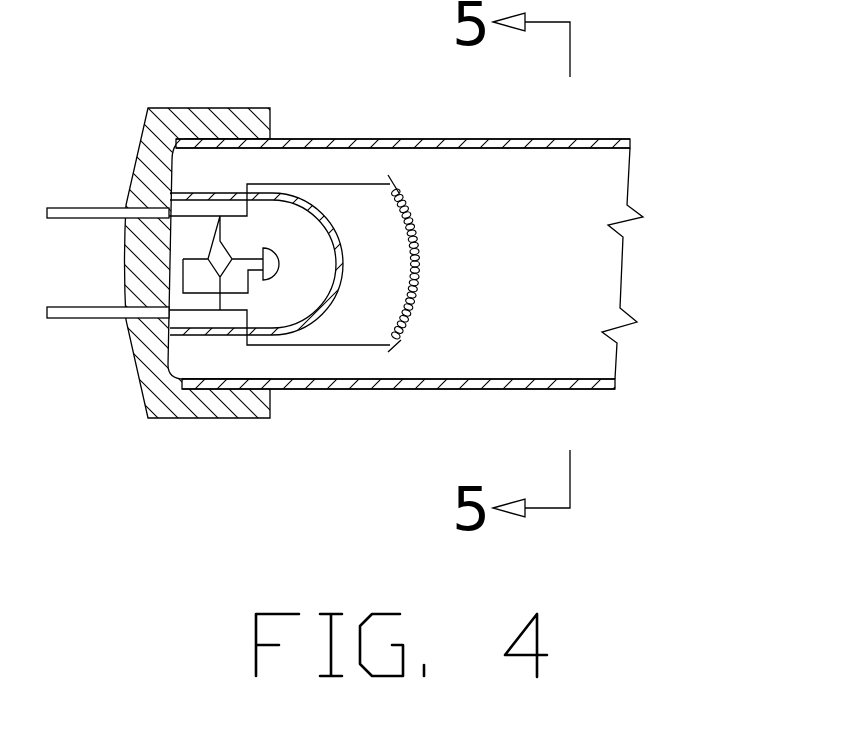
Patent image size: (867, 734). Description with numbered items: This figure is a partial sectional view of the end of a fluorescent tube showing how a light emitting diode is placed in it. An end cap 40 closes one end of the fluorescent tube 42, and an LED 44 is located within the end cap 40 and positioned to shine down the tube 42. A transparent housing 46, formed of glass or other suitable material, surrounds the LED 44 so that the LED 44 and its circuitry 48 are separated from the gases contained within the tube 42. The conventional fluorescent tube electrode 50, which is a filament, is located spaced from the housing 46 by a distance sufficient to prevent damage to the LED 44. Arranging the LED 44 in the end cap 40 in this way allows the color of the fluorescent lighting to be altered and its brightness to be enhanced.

The end cap 40 is at (195, 420).
The fluorescent tube 42 is at (580, 139).
The LED 44 is at (279, 275).
The transparent housing 46 is at (407, 222).
The circuitry 48 is at (226, 247).
The fluorescent tube electrode 50 is at (410, 285).